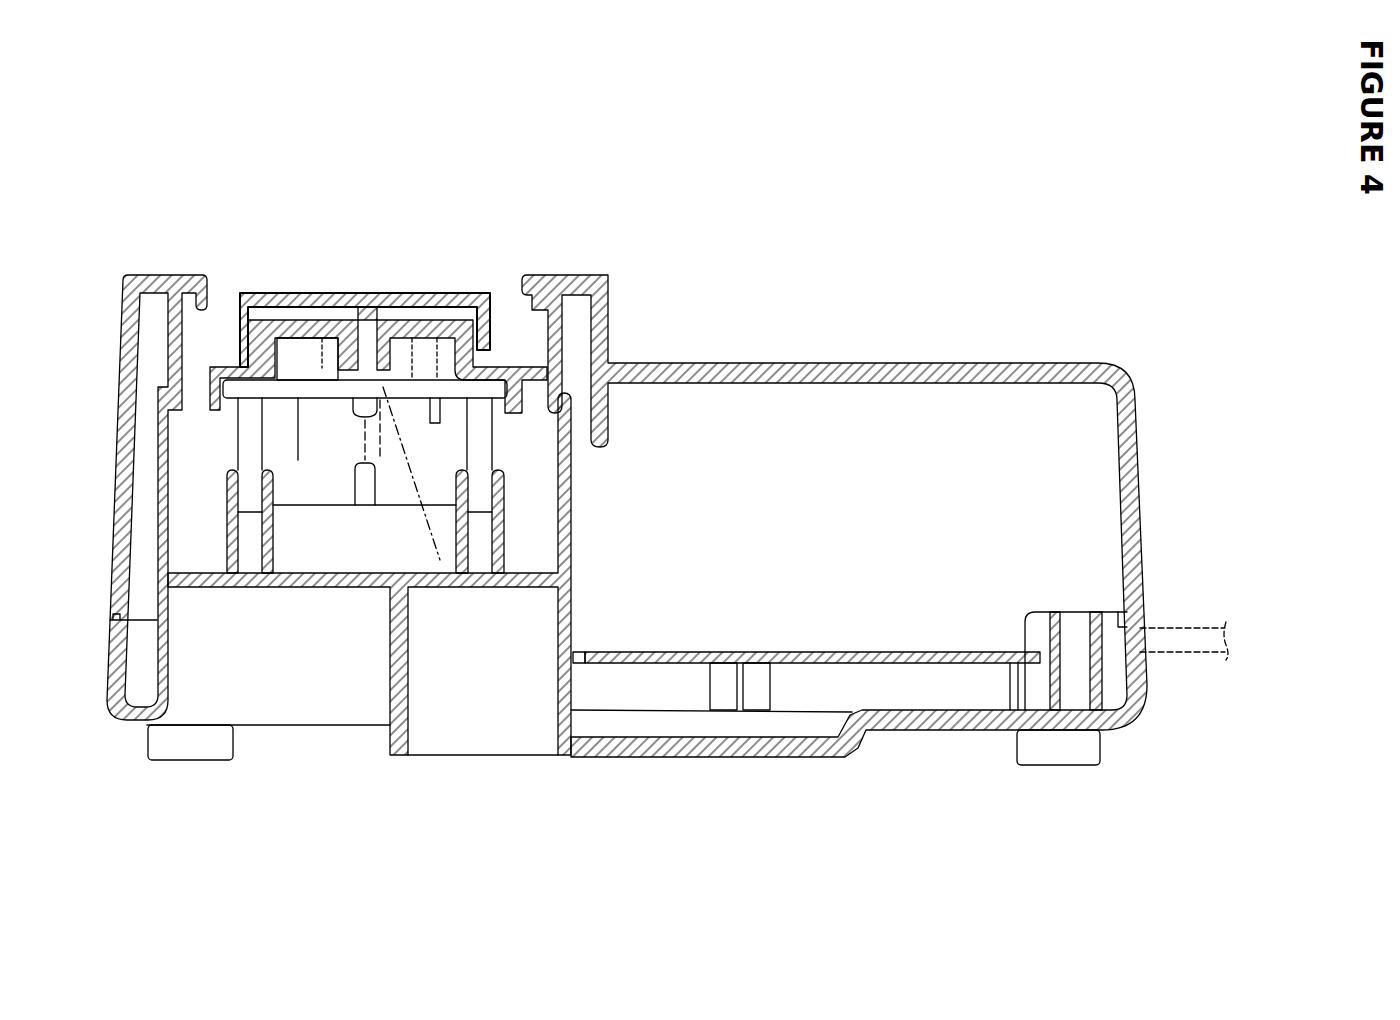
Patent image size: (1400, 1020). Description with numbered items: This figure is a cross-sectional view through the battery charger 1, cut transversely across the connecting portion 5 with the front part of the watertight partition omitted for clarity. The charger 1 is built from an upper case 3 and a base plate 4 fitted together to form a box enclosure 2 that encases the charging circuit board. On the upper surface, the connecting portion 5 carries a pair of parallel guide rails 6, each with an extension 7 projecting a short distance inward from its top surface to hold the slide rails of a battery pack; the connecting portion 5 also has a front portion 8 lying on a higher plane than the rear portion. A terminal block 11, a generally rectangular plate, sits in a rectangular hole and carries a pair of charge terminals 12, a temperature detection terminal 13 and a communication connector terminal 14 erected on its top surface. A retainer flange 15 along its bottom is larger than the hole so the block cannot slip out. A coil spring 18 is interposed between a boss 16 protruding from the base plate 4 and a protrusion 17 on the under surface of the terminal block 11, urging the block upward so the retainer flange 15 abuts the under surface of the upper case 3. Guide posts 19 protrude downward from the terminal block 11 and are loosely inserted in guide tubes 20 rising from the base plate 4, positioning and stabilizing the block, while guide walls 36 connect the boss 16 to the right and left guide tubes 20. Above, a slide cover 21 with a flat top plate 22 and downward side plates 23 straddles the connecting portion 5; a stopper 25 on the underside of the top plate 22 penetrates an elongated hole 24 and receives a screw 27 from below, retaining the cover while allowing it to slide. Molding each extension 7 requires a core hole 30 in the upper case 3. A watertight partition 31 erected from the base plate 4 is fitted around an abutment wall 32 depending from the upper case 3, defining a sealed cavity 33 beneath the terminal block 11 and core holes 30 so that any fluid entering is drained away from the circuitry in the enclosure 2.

The battery charger 1 is at (858, 340).
The box enclosure 2 is at (1060, 362).
The upper case 3 is at (1135, 440).
The base plate 4 is at (1140, 710).
The connecting portion 5 is at (453, 247).
The guide rails 6 is at (150, 275).
The extension 7 is at (192, 292).
The front portion 8 is at (298, 320).
The terminal block 11 is at (290, 402).
The charge terminals 12 is at (252, 293).
The temperature detection terminal 13 is at (440, 322).
The communication connector terminal 14 is at (320, 300).
The retainer flange 15 is at (598, 330).
The boss 16 is at (360, 507).
The protrusion 17 is at (385, 310).
The coil spring 18 is at (408, 560).
The guide posts 19 is at (570, 452).
The guide tubes 20 is at (231, 590).
The slide cover 21 is at (272, 290).
The top plate 22 is at (341, 300).
The side plates 23 is at (552, 340).
The elongated hole 24 is at (345, 395).
The stopper 25 is at (358, 318).
The screw 27 is at (348, 400).
The core hole 30 is at (540, 397).
The watertight partition 31 is at (568, 525).
The abutment wall 32 is at (155, 360).
The cavity 33 is at (200, 545).
The guide walls 36 is at (300, 556).